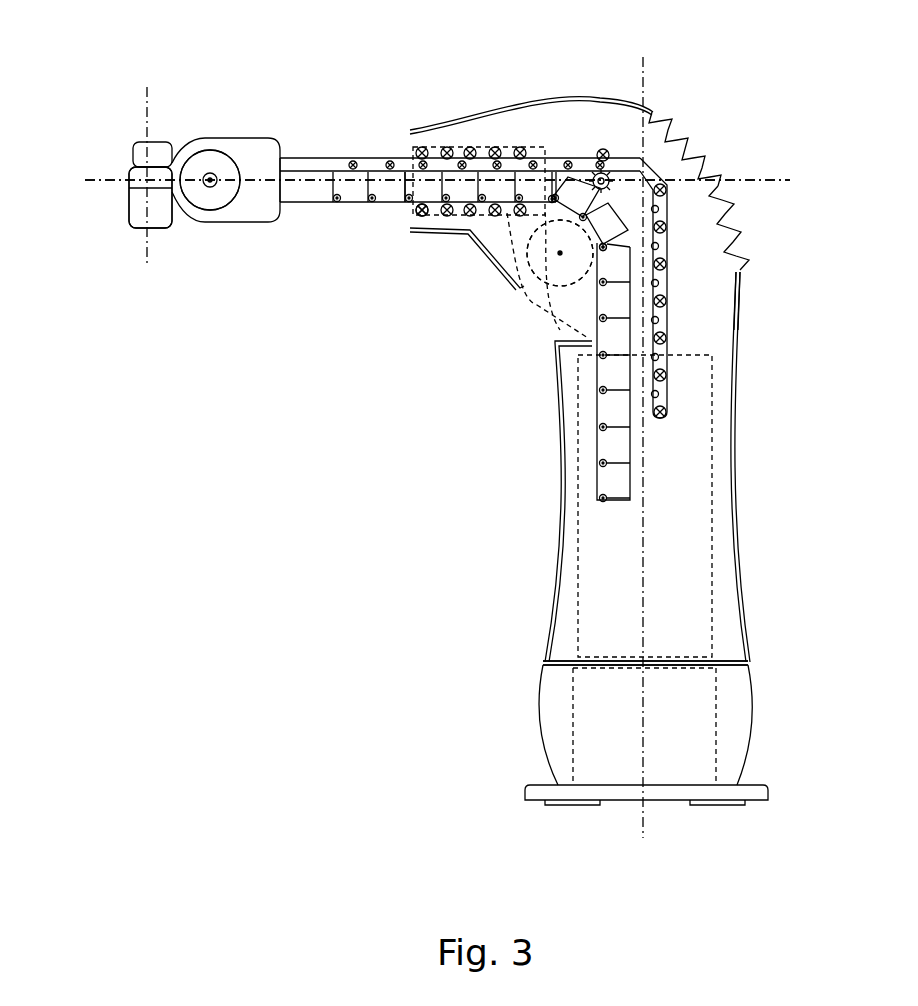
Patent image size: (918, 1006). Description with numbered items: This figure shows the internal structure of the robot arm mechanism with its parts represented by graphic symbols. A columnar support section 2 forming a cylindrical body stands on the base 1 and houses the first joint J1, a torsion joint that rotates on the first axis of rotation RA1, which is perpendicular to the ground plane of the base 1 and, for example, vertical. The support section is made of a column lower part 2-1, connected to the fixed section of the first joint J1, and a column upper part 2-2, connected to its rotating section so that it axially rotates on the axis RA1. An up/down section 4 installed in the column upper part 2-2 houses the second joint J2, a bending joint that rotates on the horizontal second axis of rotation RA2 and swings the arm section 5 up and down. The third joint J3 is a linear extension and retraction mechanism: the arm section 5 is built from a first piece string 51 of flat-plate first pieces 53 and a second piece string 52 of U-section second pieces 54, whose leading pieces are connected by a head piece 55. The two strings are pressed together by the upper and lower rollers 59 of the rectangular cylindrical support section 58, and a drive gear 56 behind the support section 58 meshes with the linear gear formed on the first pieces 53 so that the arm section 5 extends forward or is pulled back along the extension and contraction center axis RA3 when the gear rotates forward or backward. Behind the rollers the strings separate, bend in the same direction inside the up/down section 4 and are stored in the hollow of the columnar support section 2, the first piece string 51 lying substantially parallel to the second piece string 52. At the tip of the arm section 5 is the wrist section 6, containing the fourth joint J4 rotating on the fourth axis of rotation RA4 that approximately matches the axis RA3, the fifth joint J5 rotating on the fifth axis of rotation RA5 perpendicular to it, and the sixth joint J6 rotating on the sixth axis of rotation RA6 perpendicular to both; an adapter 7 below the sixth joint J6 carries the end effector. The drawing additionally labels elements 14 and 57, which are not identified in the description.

The base 1 is at (769, 788).
The columnar support section 2 is at (626, 528).
The column lower part 2-1 is at (522, 720).
The column upper part 2-2 is at (540, 537).
The up/down section 4 is at (718, 142).
The arm section 5 is at (529, 235).
The wrist section 6 is at (232, 123).
The adapter 7 is at (162, 230).
The cable 14 is at (736, 212).
The first piece string 51 is at (678, 383).
The second piece string 52 is at (590, 446).
The first piece 53 is at (670, 363).
The second piece 54 is at (593, 406).
The head piece 55 is at (310, 205).
The drive gear 56 is at (590, 172).
The gear 57 is at (599, 168).
The support section 58 is at (502, 145).
The upper and lower rollers 59 is at (452, 147).
The first joint J1 is at (765, 664).
The second joint J2 is at (552, 323).
The third joint J3 is at (407, 214).
The fourth joint J4 is at (287, 141).
The fifth joint J5 is at (207, 215).
The sixth joint J6 is at (128, 234).
The first axis of rotation RA1 is at (644, 436).
The second axis of rotation RA2 is at (560, 253).
The third axis of movement RA3 is at (404, 182).
The fourth axis of rotation RA4 is at (404, 182).
The fifth axis of rotation RA5 is at (214, 186).
The sixth axis of rotation RA6 is at (148, 165).